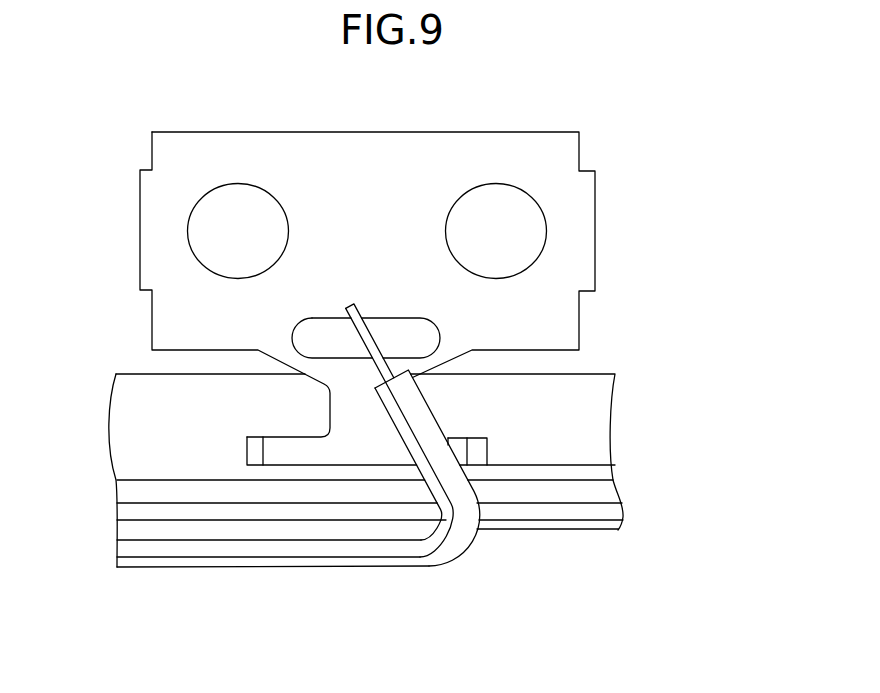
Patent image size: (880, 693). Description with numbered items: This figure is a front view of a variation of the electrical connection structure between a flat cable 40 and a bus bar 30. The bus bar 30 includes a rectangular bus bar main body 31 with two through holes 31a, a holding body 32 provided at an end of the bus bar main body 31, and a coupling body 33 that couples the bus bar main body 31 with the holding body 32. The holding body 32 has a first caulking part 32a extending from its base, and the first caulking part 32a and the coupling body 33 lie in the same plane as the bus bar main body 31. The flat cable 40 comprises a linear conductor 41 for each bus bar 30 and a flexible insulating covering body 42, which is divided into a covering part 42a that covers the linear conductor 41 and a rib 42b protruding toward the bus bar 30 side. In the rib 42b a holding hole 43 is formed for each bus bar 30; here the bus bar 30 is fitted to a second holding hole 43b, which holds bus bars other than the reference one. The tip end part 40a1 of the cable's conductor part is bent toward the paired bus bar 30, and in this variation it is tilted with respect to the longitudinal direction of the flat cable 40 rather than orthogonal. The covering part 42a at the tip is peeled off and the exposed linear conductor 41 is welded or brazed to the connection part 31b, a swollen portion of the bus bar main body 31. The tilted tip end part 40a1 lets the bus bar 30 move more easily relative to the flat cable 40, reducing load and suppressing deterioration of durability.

The bus bar 30 is at (549, 108).
The bus bar main body 31 is at (152, 150).
The through hole 31a is at (230, 210).
The connection part 31b is at (422, 332).
The linear conductor 41 is at (362, 306).
The flat cable 40 is at (105, 352).
The tip end part 40a1 is at (438, 462).
The coupling body 33 is at (338, 410).
The covering body 42 is at (689, 507).
The covering part 42a is at (567, 527).
The rib 42b is at (593, 388).
The holding body 32 is at (476, 547).
The first caulking part 32a is at (287, 455).
The holding hole 43 is at (365, 642).
The second holding hole 43b is at (258, 449).